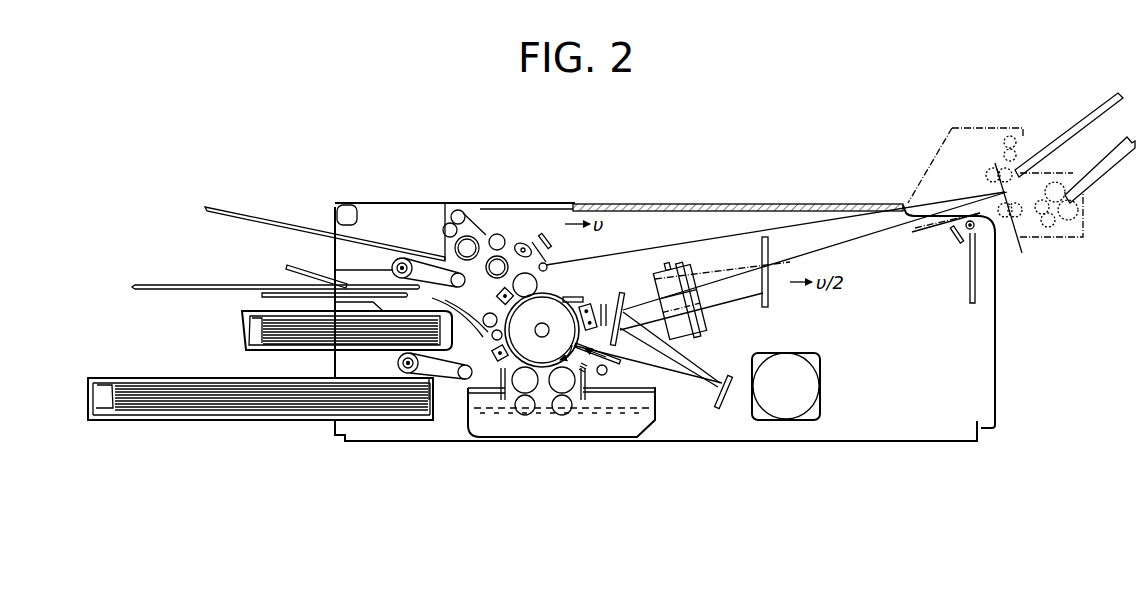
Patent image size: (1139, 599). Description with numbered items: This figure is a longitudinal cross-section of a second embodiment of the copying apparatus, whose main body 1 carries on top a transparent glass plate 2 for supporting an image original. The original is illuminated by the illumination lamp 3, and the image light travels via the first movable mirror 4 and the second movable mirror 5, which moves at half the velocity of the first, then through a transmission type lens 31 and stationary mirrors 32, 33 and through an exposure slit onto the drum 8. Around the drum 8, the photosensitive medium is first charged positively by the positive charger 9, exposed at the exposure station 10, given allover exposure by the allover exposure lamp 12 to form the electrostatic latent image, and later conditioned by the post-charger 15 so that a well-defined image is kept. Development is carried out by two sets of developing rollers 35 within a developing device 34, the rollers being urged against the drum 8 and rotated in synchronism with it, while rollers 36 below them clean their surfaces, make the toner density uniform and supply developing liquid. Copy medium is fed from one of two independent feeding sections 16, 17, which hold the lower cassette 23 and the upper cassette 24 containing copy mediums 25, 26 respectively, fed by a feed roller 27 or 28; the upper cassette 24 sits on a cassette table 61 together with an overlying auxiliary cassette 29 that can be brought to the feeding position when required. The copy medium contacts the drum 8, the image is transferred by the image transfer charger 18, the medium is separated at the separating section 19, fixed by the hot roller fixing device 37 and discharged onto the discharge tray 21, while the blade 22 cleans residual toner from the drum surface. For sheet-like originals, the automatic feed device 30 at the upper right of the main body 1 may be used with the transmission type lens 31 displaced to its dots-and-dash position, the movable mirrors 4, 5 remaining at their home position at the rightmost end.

The main body 1 is at (652, 444).
The transparent glass plate 2 is at (787, 203).
The illumination lamp 3 is at (976, 213).
The first movable mirror 4 is at (542, 234).
The second movable mirror 5 is at (770, 244).
The drum 8 is at (546, 310).
The positive charger 9 is at (603, 304).
The exposure station 10 is at (616, 373).
The allover exposure lamp 12 is at (601, 376).
The post-charger 15 is at (480, 374).
The feeding section 16 is at (434, 379).
The feeding section 17 is at (430, 268).
The image transfer charger 18 is at (495, 296).
The separating section 19 is at (527, 244).
The discharge tray 21 is at (388, 230).
The blade 22 is at (573, 297).
The lower cassette 23 is at (223, 422).
The upper cassette 24 is at (262, 353).
The copy mediums 25 is at (280, 396).
The copy mediums 26 is at (313, 330).
The feed roller 27 is at (398, 364).
The feed roller 28 is at (392, 263).
The auxiliary cassette 29 is at (285, 280).
The automatic feed device 30 is at (977, 138).
The transmission type lens 31 is at (662, 272).
The stationary mirror 32 is at (622, 292).
The stationary mirror 33 is at (732, 376).
The developing device 34 is at (580, 425).
The developing rollers 35 is at (557, 378).
The rollers 36 is at (558, 412).
The hot roller fixing device 37 is at (483, 231).
The cassette table 61 is at (320, 270).